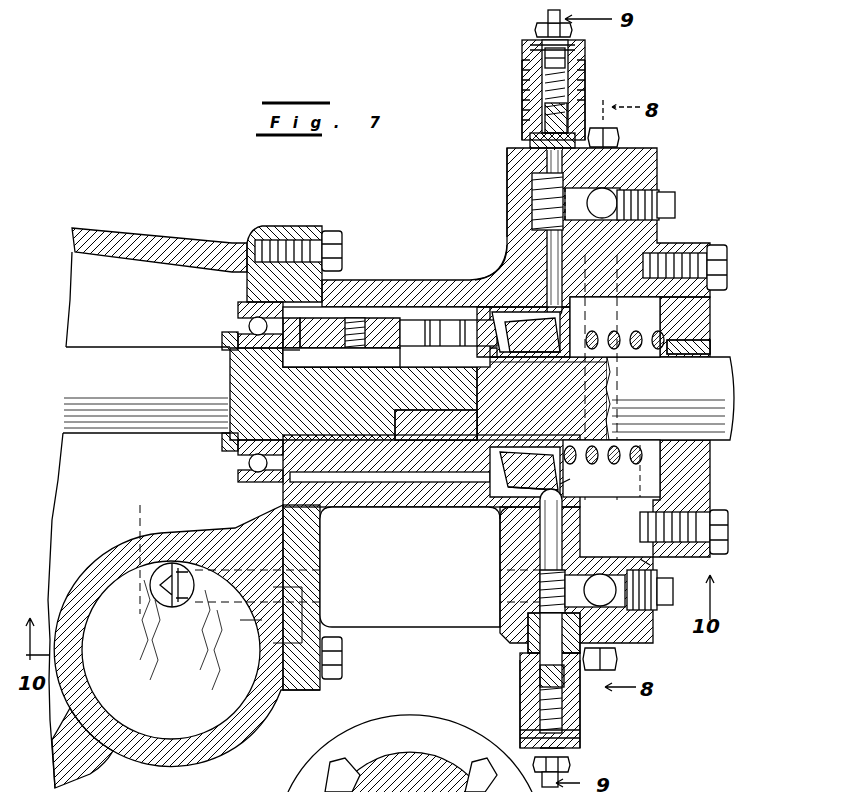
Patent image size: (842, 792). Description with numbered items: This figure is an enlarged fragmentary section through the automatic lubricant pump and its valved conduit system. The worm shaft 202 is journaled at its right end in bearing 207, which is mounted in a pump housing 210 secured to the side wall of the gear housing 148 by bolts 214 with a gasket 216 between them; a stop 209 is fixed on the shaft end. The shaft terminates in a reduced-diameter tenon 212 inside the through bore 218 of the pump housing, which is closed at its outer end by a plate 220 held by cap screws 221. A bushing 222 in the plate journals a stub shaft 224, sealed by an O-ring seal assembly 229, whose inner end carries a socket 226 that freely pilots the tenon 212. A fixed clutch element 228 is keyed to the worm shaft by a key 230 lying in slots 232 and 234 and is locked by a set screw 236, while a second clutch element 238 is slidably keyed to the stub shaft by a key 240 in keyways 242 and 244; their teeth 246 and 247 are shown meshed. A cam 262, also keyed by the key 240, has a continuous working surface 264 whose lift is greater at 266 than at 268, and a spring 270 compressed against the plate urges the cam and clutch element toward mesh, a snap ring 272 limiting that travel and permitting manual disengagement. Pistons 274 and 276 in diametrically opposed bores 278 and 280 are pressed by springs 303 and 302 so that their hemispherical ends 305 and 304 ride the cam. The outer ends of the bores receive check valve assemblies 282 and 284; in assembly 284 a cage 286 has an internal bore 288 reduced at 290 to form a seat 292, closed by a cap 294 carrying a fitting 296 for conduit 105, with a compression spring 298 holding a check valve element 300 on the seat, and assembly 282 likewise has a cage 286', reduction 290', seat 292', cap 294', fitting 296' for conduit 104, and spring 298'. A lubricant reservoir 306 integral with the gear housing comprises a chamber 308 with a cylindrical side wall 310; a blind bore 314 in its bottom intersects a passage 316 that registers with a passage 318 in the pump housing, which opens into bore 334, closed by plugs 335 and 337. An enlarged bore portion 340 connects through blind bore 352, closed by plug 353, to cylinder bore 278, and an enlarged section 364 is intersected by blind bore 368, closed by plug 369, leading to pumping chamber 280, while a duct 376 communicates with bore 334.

The conduit 104 is at (560, 772).
The conduit 105 is at (548, 16).
The gear housing 148 is at (138, 232).
The shaft 202 is at (128, 350).
The bearing 207 is at (250, 323).
The stop 209 is at (222, 338).
The pump housing 210 is at (409, 276).
The coaxial section of reduced diameter 212 is at (478, 402).
The bolts 214 is at (328, 232).
The gasket 216 is at (305, 686).
The through bore 218 is at (433, 506).
The plate 220 is at (712, 298).
The cap screws 221 is at (727, 266).
The bushing 222 is at (708, 448).
The stub shaft 224 is at (728, 378).
The socket 226 is at (505, 332).
The fixed clutch element 228 is at (312, 318).
The O-ring seal assembly 229 is at (707, 347).
The key 230 is at (336, 368).
The slot 232 is at (380, 357).
The slot 234 is at (296, 362).
The set screw 236 is at (355, 330).
The clutch element 238 is at (452, 320).
The key 240 is at (500, 358).
The keyway 242 is at (522, 368).
The keyway 244 is at (498, 312).
The teeth 246 is at (425, 320).
The teeth 247 is at (410, 470).
The cam 262 is at (523, 452).
The working surface 264 is at (552, 478).
The cam lift region 266 is at (495, 268).
The cam lift region 268 is at (545, 512).
The spring 270 is at (642, 465).
The snap ring 272 is at (443, 422).
The pump piston 274 is at (498, 535).
The pump piston 276 is at (546, 250).
The cylindrical bore 278 is at (540, 550).
The cylindrical bore 280 is at (530, 210).
The check valve assembly 282 is at (585, 720).
The check valve assembly 284 is at (590, 80).
The cage 286 is at (507, 99).
The cage 286' is at (528, 704).
The internal bore 288 is at (586, 92).
The reduced bore portion 290 is at (533, 133).
The reduced bore portion 290' is at (532, 638).
The annular seat 292 is at (522, 118).
The annular seat 292' is at (522, 676).
The cap member 294 is at (575, 40).
The cap member 294' is at (525, 725).
The fitting 296 is at (532, 30).
The fitting 296' is at (578, 751).
The compression spring 298 is at (580, 86).
The compression spring 298' is at (581, 673).
The check valve element 300 is at (542, 100).
The compression spring 302 is at (532, 200).
The compression spring 303 is at (540, 588).
The cam contacting end 304 is at (574, 312).
The cam contacting end 305 is at (570, 478).
The lubricant reservoir 306 is at (268, 712).
The chamber 308 is at (183, 686).
The cylindrical side wall 310 is at (133, 738).
The blind bore 314 is at (150, 590).
The passage 316 is at (208, 605).
The passage 318 is at (372, 610).
The bore 334 is at (659, 564).
The threaded plug 335 is at (617, 657).
The threaded plug 337 is at (618, 132).
The enlarged upper portion 340 is at (596, 575).
The blind bore 352 is at (640, 612).
The threaded plug 353 is at (673, 592).
The enlarged upper section 364 is at (620, 200).
The blind bore 368 is at (640, 220).
The threaded plug 369 is at (676, 206).
The duct 376 is at (605, 220).